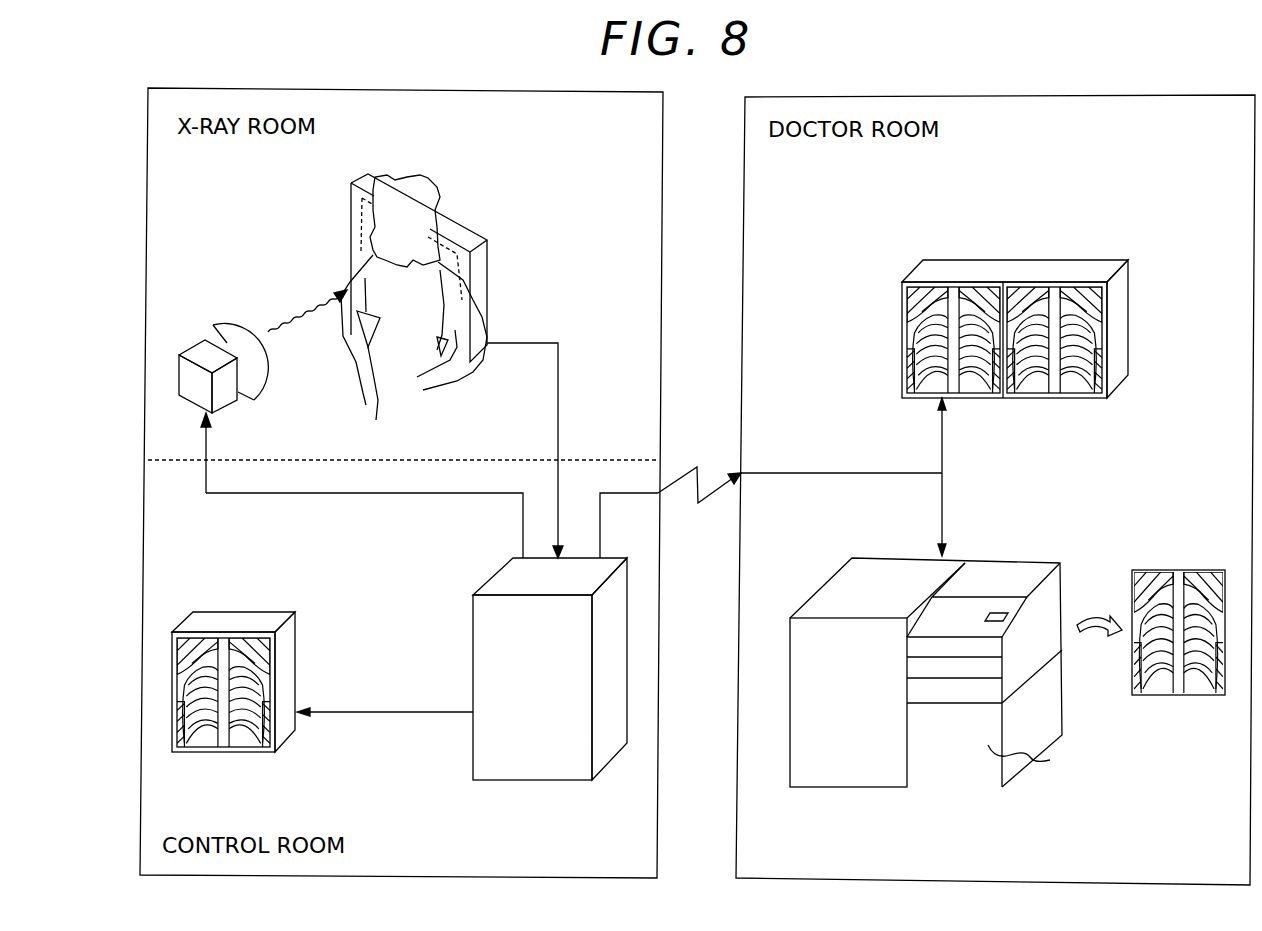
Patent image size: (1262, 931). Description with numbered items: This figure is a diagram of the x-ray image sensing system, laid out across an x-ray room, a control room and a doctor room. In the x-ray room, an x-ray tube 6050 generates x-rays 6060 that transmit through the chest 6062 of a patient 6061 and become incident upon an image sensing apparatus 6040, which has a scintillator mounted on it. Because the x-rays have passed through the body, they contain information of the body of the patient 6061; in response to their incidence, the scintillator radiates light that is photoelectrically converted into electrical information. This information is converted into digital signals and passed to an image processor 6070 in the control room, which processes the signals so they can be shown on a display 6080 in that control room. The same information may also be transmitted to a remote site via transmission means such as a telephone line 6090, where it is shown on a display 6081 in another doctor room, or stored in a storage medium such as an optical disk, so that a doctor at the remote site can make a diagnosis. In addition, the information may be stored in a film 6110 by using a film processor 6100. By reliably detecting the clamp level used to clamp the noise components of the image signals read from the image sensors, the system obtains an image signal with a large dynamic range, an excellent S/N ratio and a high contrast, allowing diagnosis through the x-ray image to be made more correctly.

The image sensing apparatus 6040 is at (489, 267).
The x-ray tube 6050 is at (202, 348).
The x-rays 6060 is at (298, 308).
The patient 6061 is at (431, 180).
The chest 6062 is at (398, 383).
The image processor 6070 is at (502, 768).
The display 6080 is at (232, 613).
The display 6081 is at (968, 258).
The telephone line 6090 is at (692, 463).
The film processor 6100 is at (812, 770).
The film 6110 is at (1185, 570).